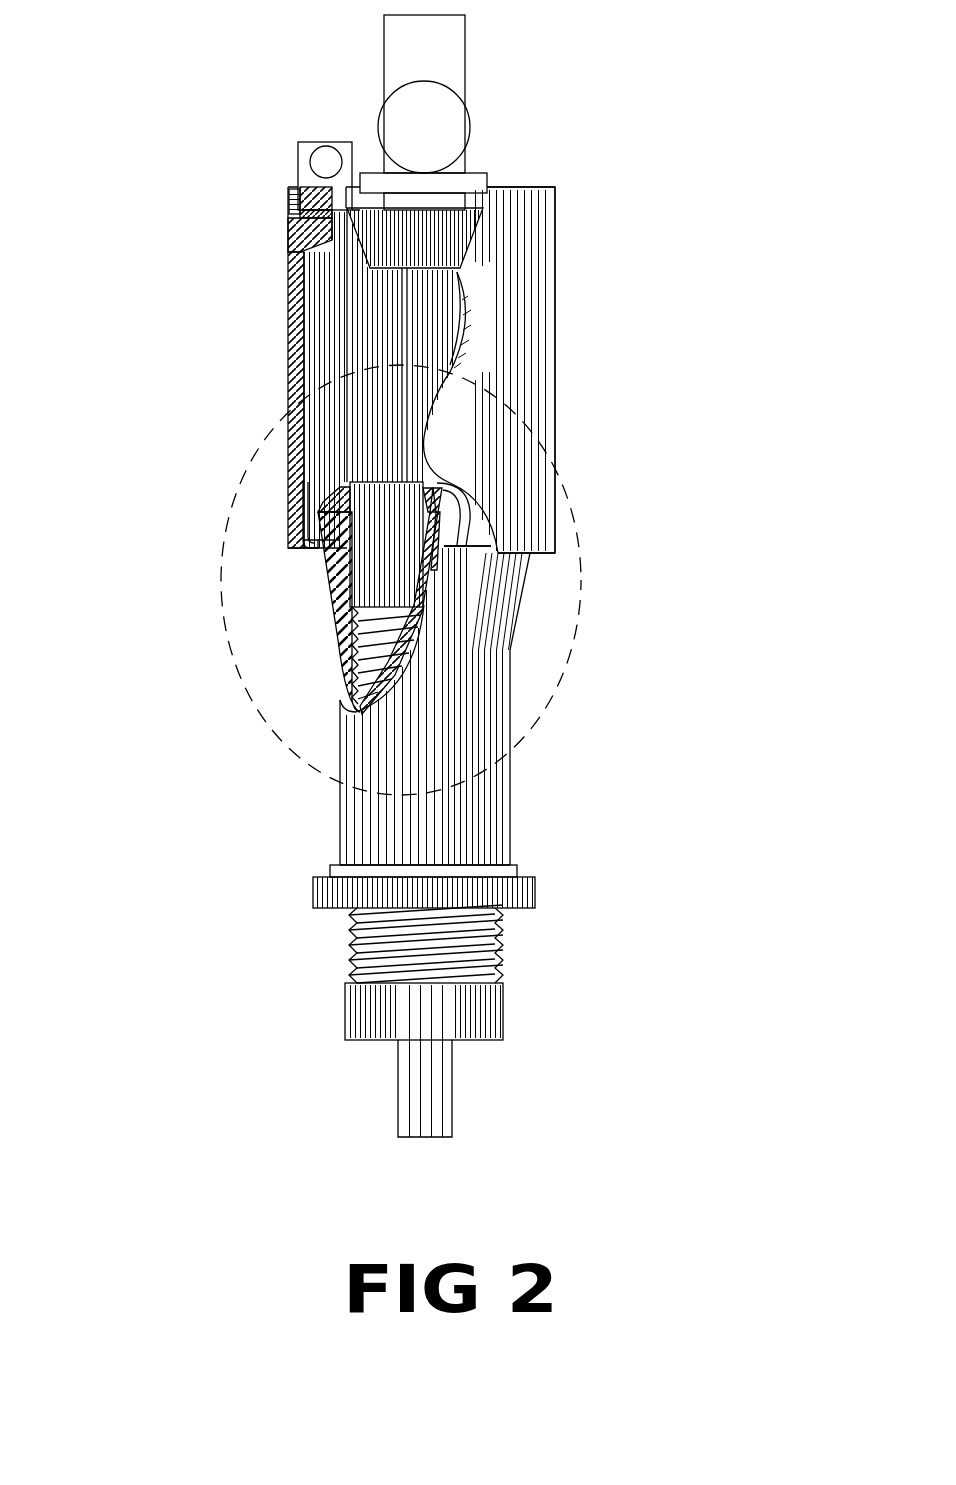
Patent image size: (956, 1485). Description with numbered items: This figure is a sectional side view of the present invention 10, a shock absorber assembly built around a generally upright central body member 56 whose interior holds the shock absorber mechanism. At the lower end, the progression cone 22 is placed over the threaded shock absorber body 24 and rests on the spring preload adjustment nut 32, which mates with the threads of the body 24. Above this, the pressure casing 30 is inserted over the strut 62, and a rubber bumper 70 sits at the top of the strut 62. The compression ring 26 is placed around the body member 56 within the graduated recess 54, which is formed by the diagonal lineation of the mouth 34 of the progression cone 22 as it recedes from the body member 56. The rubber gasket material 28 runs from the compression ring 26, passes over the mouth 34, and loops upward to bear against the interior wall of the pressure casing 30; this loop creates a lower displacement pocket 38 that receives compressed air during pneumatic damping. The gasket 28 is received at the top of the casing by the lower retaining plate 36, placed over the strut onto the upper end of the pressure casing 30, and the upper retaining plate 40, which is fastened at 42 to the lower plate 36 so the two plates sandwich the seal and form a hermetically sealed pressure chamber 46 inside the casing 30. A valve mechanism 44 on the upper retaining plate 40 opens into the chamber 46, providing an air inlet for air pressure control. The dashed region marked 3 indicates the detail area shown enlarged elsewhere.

The present invention 10 is at (648, 192).
The progression cone 22 is at (468, 647).
The threaded shock absorber body 24 is at (343, 657).
The compression ring 26 is at (332, 490).
The rubber gasket material 28 is at (310, 335).
The pressure casing 30 is at (557, 367).
The spring preload adjustment nut 32 is at (537, 897).
The mouth 34 is at (483, 537).
The lower retaining plate 36 is at (295, 228).
The lower displacement pocket 38 is at (345, 505).
The upper retaining plate 40 is at (295, 192).
The fastener 42 is at (292, 187).
The valve mechanism 44 is at (337, 142).
The pressure chamber 46 is at (323, 297).
The graduated recess 54 is at (320, 548).
The central body member 56 is at (353, 522).
The strut 62 is at (443, 317).
The rubber bumper 70 is at (468, 240).
The detail view region 3 is at (263, 757).